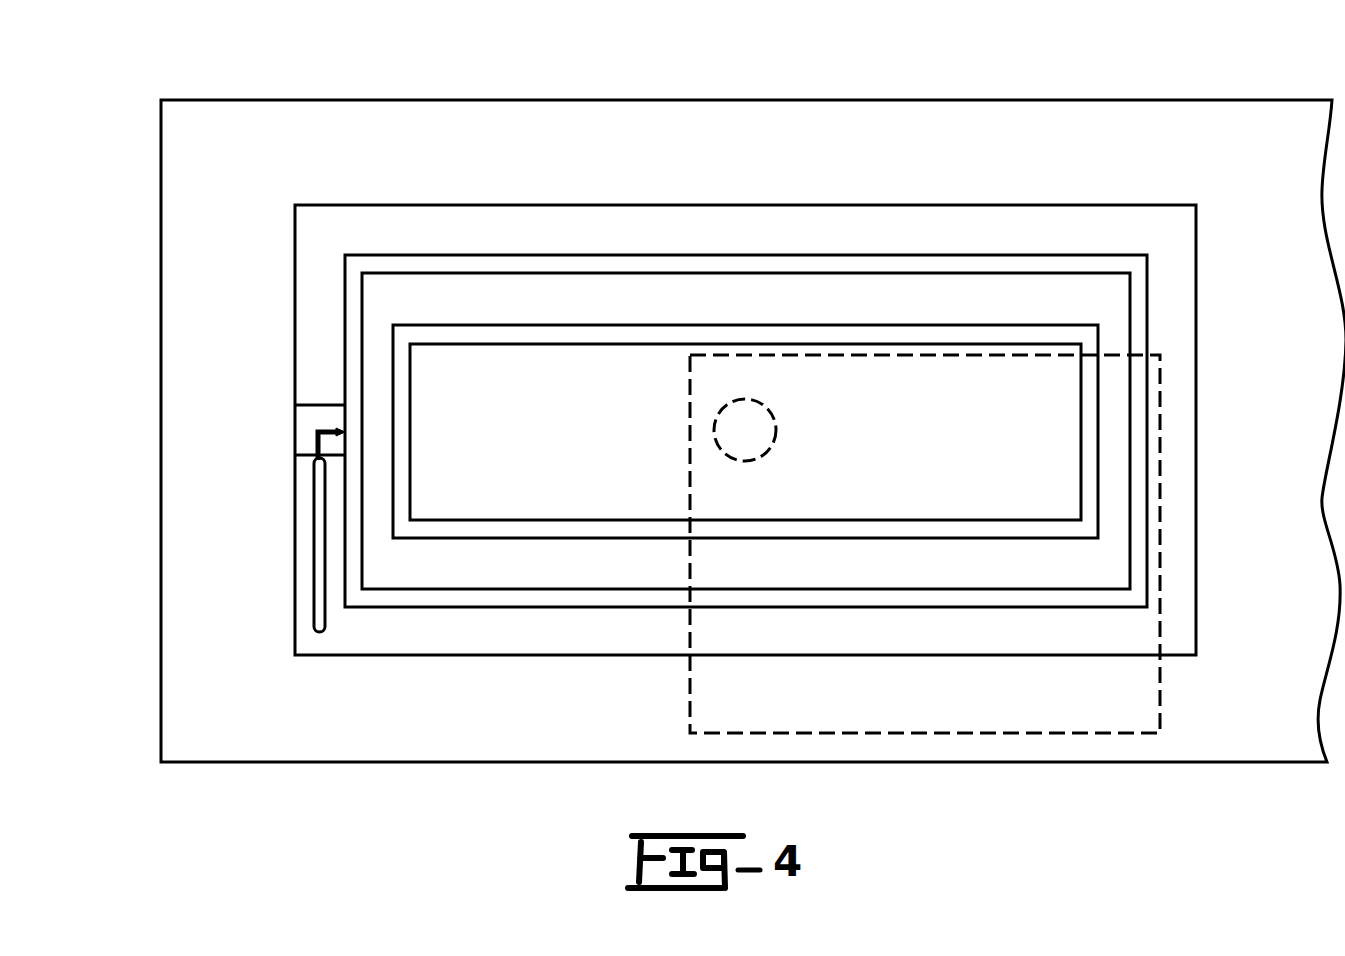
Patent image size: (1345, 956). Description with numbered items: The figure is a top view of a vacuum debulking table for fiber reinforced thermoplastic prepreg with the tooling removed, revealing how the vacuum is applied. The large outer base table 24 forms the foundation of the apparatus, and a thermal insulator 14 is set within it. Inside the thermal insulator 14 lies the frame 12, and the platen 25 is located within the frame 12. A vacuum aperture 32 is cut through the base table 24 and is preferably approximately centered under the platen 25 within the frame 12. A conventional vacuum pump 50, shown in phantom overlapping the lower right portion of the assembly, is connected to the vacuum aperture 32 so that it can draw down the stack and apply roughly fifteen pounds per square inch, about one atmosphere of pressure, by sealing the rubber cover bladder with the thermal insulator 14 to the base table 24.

The base table 24 is at (295, 100).
The thermal insulator 14 is at (413, 235).
The platen 25 is at (446, 314).
The frame 12 is at (668, 323).
The vacuum pump 50 is at (1163, 702).
The vacuum aperture 32 is at (778, 425).